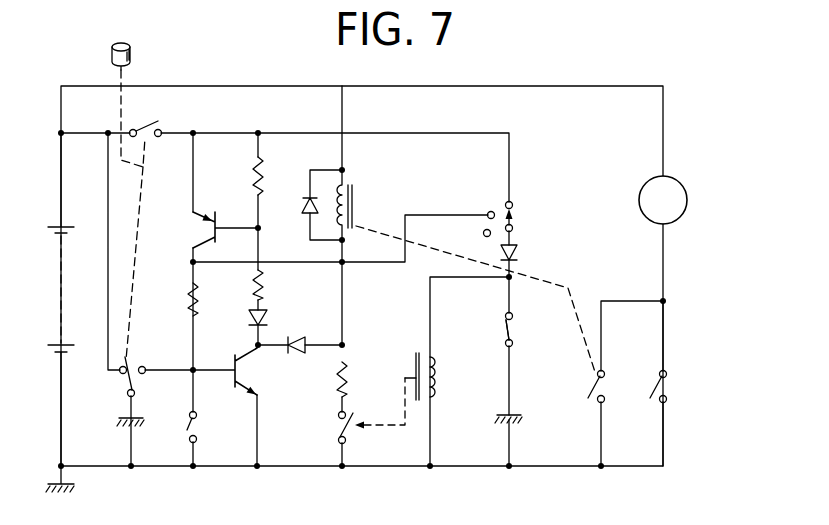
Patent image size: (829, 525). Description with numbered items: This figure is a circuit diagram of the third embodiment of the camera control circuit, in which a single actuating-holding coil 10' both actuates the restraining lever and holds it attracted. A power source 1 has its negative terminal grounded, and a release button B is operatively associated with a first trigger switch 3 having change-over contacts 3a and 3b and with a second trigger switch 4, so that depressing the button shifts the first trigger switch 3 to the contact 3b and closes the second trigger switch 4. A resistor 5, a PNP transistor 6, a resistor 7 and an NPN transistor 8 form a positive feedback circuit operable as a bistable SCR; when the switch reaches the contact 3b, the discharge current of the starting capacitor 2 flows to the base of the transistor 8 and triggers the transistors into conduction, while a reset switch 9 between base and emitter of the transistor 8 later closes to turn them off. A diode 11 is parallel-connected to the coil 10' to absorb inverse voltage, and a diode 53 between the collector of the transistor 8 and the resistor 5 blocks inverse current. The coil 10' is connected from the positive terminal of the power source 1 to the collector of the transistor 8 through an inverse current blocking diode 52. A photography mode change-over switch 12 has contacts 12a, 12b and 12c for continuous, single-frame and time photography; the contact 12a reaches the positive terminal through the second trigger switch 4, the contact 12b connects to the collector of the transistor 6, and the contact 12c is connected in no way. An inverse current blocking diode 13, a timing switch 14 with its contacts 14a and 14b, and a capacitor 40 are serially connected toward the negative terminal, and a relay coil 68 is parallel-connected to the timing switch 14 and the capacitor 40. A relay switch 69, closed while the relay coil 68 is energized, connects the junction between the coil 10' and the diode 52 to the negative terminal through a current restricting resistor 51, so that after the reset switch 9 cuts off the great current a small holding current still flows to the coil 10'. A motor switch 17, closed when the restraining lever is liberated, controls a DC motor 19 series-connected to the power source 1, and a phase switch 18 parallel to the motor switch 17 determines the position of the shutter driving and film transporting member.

The release button B is at (129, 51).
The second trigger switch 4 is at (143, 127).
The power source 1 is at (64, 280).
The PNP transistor 6 is at (212, 229).
The diode 11 is at (303, 198).
The actuating-holding coil 10' is at (466, 271).
The change-over contact 12b is at (489, 209).
The change-over contact 12a is at (513, 203).
The change-over contact 12c is at (483, 233).
The photography mode change-over switch 12 is at (513, 228).
The inverse current blocking diode 13 is at (514, 258).
The DC motor 19 is at (648, 180).
The resistor 7 is at (188, 300).
The resistor 5 is at (262, 290).
The diode 53 is at (248, 322).
The inverse current blocking diode 52 is at (292, 340).
The NPN transistor 8 is at (243, 372).
The current restricting resistor 51 is at (348, 380).
The relay switch 69 is at (338, 427).
The relay coil 68 is at (415, 357).
The timing switch contact 14b is at (514, 316).
The timing switch 14 is at (514, 343).
The timing switch contact 14a is at (504, 322).
The capacitor 40 is at (500, 415).
The motor switch 17 is at (590, 389).
The phase switch 18 is at (655, 385).
The first trigger switch 3 is at (127, 362).
The change-over contact 3a is at (122, 384).
The change-over contact 3b is at (143, 374).
The starting capacitor 2 is at (116, 420).
The reset switch 9 is at (204, 428).